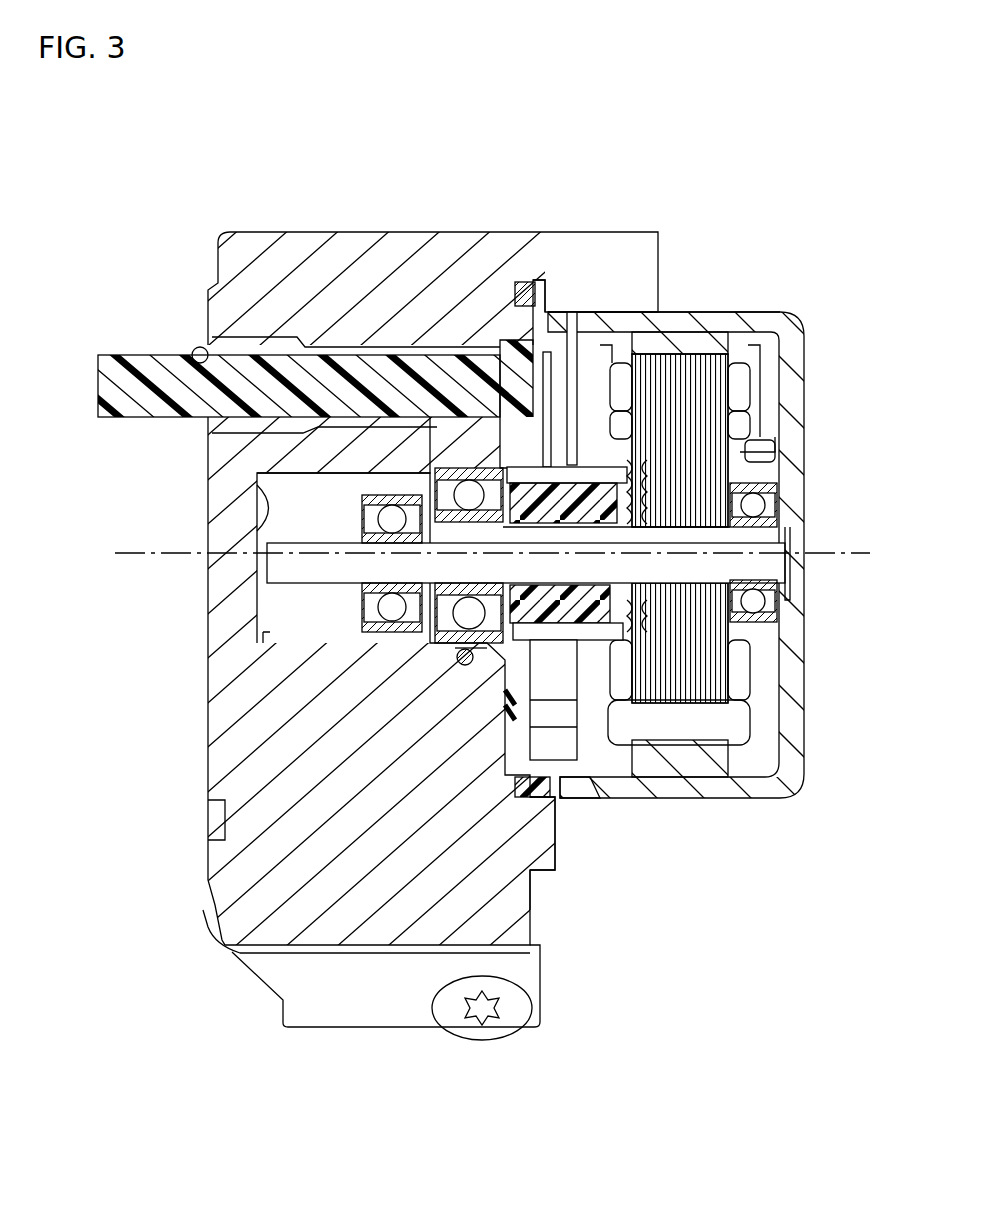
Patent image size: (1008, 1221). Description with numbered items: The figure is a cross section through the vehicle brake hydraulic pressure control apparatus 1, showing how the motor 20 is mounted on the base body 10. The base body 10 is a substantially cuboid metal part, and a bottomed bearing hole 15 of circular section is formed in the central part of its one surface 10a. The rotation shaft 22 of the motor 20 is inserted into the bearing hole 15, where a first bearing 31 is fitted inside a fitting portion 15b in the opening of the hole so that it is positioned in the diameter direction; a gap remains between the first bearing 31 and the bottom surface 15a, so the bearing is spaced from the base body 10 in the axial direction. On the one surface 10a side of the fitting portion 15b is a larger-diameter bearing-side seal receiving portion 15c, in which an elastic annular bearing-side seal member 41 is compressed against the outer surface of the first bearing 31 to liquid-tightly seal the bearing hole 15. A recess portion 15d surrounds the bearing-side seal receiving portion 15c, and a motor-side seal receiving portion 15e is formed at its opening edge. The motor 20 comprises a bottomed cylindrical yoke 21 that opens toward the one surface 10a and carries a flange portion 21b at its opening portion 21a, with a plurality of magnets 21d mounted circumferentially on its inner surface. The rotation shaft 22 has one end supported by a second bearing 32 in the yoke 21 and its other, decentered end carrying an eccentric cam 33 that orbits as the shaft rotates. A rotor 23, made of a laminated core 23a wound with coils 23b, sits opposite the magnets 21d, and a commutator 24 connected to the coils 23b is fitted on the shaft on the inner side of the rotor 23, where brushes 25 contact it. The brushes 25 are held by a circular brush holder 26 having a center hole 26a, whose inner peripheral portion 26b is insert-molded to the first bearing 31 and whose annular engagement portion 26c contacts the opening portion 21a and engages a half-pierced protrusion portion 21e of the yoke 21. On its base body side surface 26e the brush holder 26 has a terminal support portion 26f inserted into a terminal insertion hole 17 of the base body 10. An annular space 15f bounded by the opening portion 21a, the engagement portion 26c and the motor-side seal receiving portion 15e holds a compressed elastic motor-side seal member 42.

The motor 1 is at (655, 182).
The base body 10 is at (290, 228).
The one surface 10a is at (535, 890).
The bearing hole 15 is at (256, 610).
The bottom surface 15a is at (258, 490).
The fitting portion 15b is at (425, 473).
The bearing-side seal receiving portion 15c is at (470, 662).
The recess portion 15d is at (493, 715).
The motor-side seal receiving portion 15e is at (522, 296).
The annular space 15f is at (547, 800).
The terminal insertion hole 17 is at (198, 350).
The motor 20 is at (772, 308).
The yoke 21 is at (738, 320).
The opening portion 21a is at (590, 318).
The flange portion 21b is at (548, 300).
The magnets 21d is at (690, 335).
The protrusion portion 21e is at (600, 795).
The rotation shaft 22 is at (795, 538).
The rotor 23 is at (752, 360).
The laminated core 23a is at (715, 385).
The coils 23b is at (738, 437).
The commutator 24 is at (720, 580).
The brush 25 is at (655, 668).
The brush holder 26 is at (660, 745).
The center hole 26a is at (655, 630).
The inner peripheral portion 26b is at (665, 700).
The engagement portion 26c is at (565, 792).
The surface 26e is at (235, 818).
The terminal support portion 26f is at (112, 358).
The first bearing 31 is at (445, 470).
The second bearing 32 is at (778, 490).
The eccentric cam 33 is at (305, 630).
The bearing-side seal member 41 is at (483, 300).
The motor-side seal member 42 is at (530, 940).